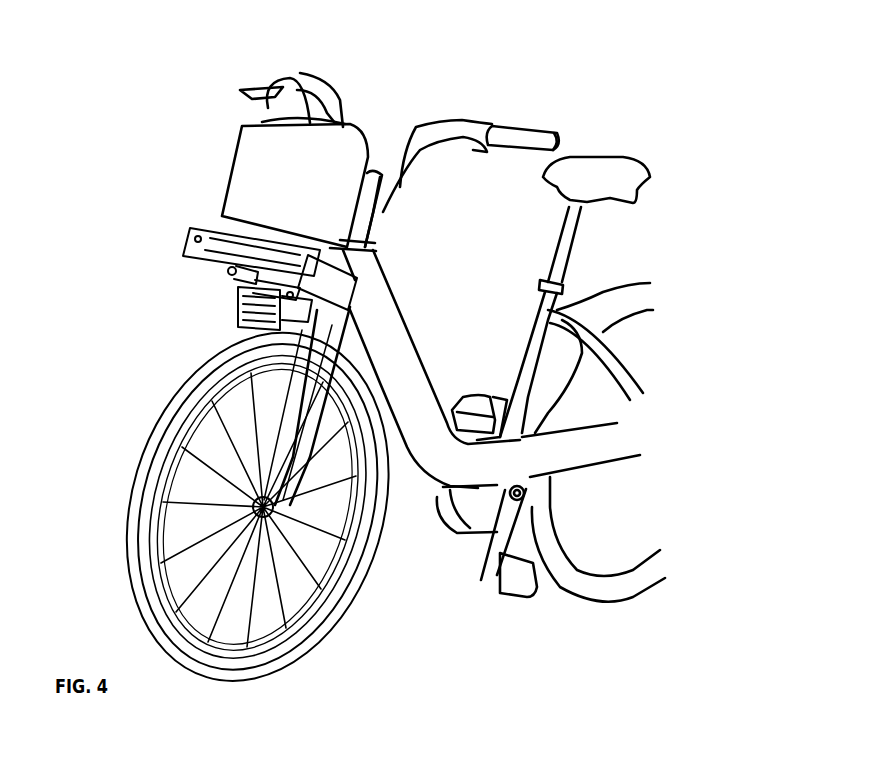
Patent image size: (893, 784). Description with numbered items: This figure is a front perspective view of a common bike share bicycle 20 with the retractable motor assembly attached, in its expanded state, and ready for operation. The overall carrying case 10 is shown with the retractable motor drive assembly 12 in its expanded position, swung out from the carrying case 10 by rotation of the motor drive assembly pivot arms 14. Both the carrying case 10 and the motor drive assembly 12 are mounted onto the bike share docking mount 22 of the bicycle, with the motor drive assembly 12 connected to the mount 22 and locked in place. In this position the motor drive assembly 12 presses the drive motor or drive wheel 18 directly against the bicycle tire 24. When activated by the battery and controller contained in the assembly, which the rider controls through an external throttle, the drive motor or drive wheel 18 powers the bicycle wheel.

The carrying case 10 is at (190, 232).
The motor drive assembly 12 is at (240, 317).
The motor drive assembly pivot arms 14 is at (245, 277).
The drive motor or drive wheel 18 is at (330, 327).
The bike share bicycle 20 is at (448, 117).
The bike share docking mount 22 is at (252, 287).
The bicycle tire 24 is at (170, 397).